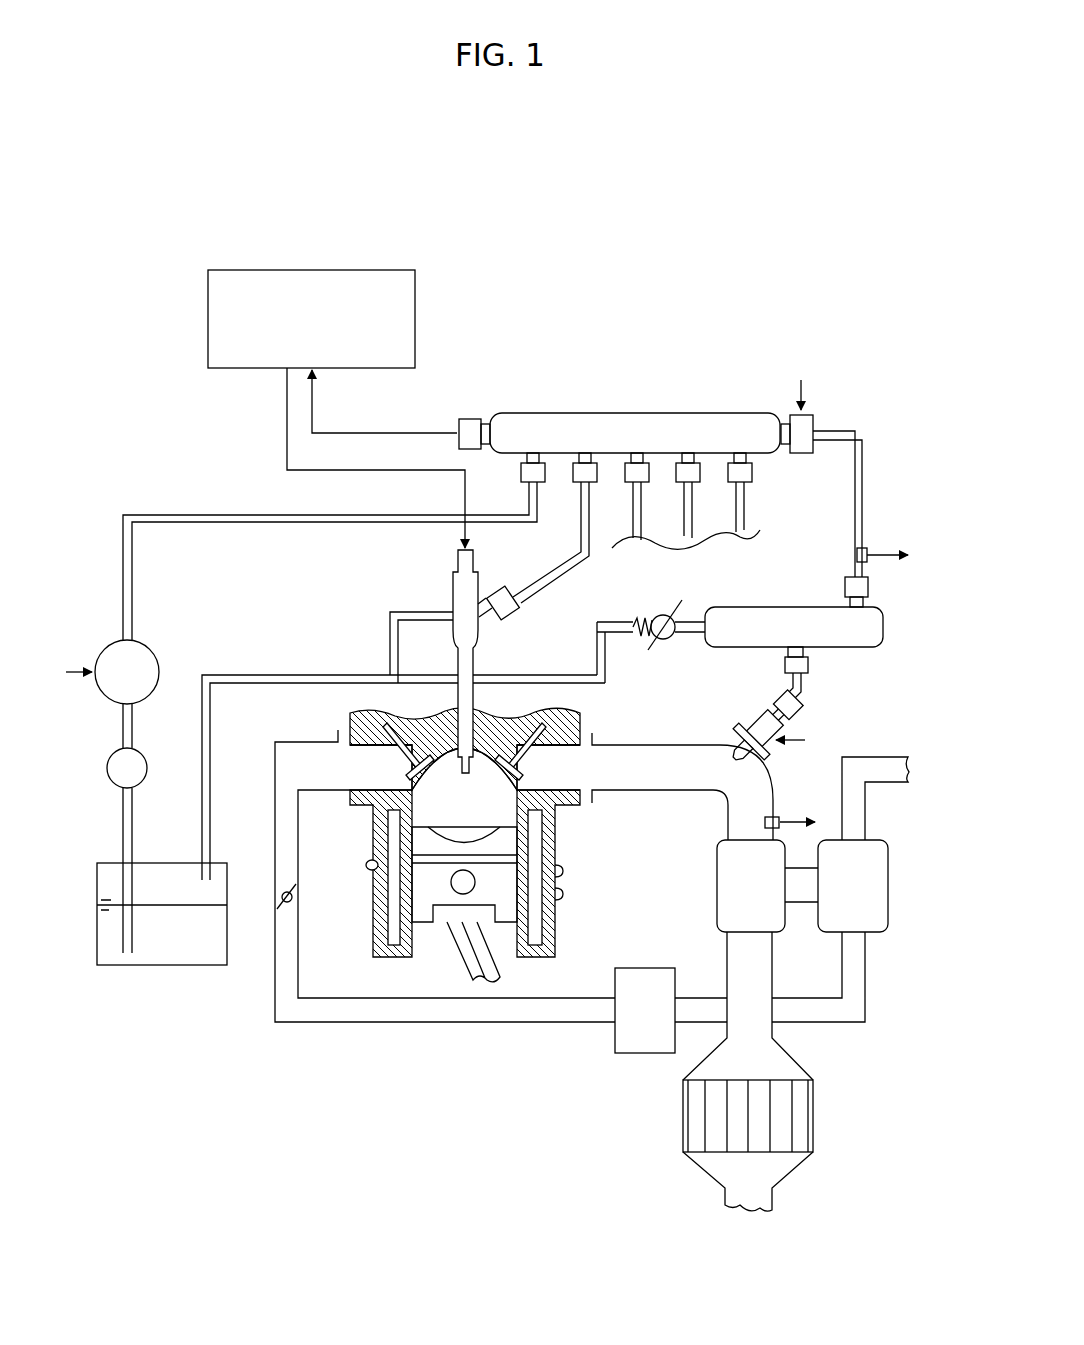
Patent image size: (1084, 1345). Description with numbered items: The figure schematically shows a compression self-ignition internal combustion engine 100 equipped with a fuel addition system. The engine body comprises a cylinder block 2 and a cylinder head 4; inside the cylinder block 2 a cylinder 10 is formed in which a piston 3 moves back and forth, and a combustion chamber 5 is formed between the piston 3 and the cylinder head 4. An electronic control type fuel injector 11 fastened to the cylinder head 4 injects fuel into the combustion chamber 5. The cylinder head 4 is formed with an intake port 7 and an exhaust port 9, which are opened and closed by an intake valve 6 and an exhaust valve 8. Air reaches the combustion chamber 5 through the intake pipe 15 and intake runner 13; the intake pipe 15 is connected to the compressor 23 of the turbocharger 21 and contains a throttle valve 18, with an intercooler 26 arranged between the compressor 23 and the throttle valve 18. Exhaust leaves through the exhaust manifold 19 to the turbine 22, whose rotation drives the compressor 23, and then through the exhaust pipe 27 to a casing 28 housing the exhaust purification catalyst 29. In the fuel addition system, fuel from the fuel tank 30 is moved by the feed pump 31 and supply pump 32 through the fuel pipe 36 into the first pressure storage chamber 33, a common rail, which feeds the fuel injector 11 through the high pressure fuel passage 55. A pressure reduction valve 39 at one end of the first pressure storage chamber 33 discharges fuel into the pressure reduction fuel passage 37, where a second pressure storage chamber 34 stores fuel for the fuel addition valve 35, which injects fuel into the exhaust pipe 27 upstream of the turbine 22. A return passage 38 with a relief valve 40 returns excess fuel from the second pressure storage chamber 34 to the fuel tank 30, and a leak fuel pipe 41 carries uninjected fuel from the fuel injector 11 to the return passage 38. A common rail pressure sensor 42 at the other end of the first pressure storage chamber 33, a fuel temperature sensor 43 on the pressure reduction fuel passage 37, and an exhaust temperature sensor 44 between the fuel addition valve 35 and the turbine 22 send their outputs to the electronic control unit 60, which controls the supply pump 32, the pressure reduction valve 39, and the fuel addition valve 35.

The internal combustion engine 100 is at (757, 312).
The cylinder block 2 is at (558, 840).
The piston 3 is at (428, 880).
The cylinder head 4 is at (348, 720).
The combustion chamber 5 is at (453, 810).
The intake valve 6 is at (423, 742).
The intake port 7 is at (364, 772).
The exhaust valve 8 is at (510, 742).
The exhaust port 9 is at (580, 778).
The cylinder 10 is at (505, 945).
The fuel injector 11 is at (452, 580).
The intake runner 13 is at (290, 770).
The intake pipe 15 is at (330, 1023).
The throttle valve 18 is at (281, 893).
The exhaust manifold 19 is at (638, 756).
The turbocharger 21 is at (805, 924).
The turbine 22 is at (717, 886).
The compressor 23 is at (890, 873).
The intercooler 26 is at (628, 1054).
The exhaust pipe 27 is at (727, 954).
The casing 28 is at (815, 1097).
The exhaust purification catalyst 29 is at (780, 1131).
The fuel tank 30 is at (188, 967).
The feed pump 31 is at (143, 757).
The supply pump 32 is at (153, 650).
The first pressure storage chamber 33 is at (668, 412).
The second pressure storage chamber 34 is at (838, 650).
The fuel addition valve 35 is at (748, 722).
The fuel pipe 36 is at (186, 515).
The pressure reduction fuel passage 37 is at (868, 447).
The return passage 38 is at (258, 674).
The pressure reduction valve 39 is at (812, 412).
The relief valve 40 is at (670, 608).
The leak fuel pipe 41 is at (388, 616).
The common rail pressure sensor 42 is at (472, 418).
The fuel temperature sensor 43 is at (878, 545).
The exhaust temperature sensor 44 is at (776, 816).
The high pressure fuel passage 55 is at (574, 566).
The electronic control unit 60 is at (378, 268).